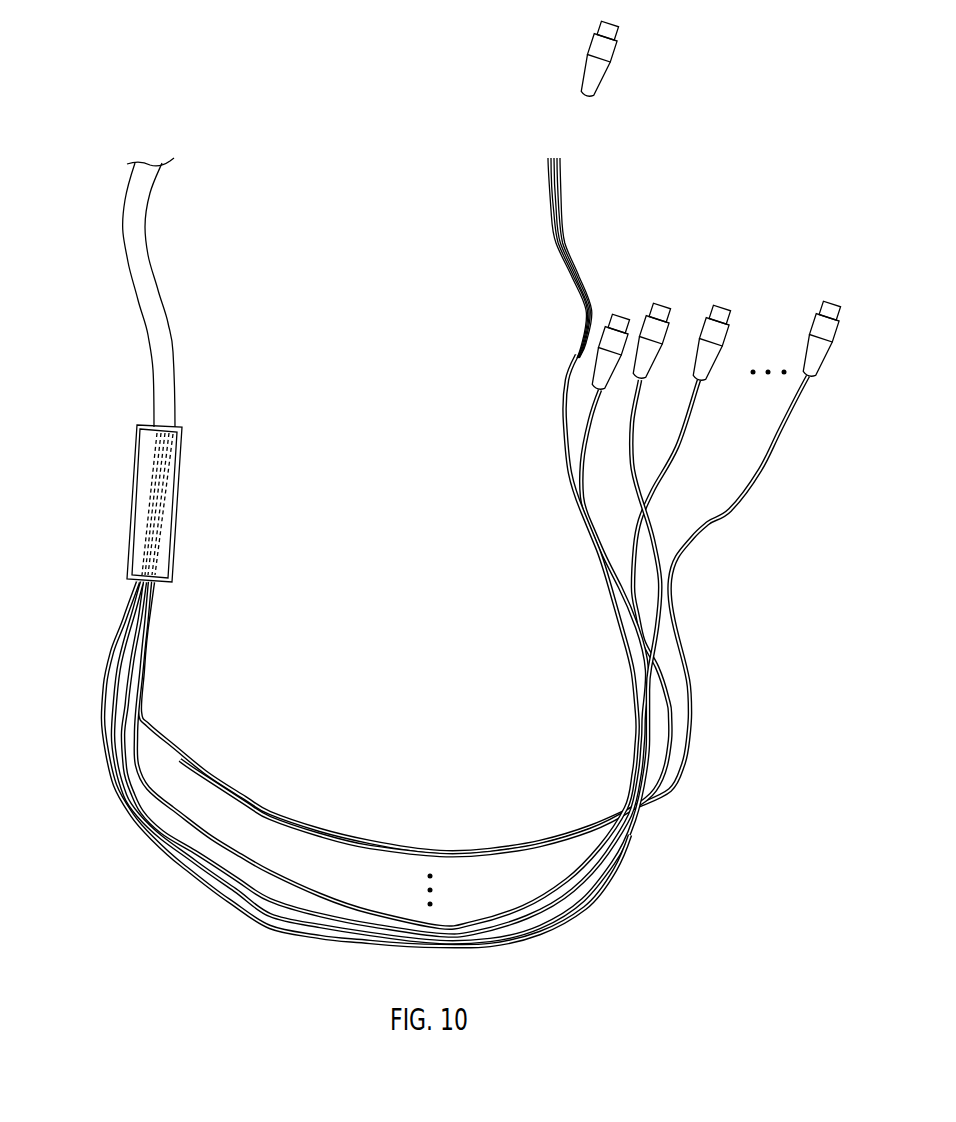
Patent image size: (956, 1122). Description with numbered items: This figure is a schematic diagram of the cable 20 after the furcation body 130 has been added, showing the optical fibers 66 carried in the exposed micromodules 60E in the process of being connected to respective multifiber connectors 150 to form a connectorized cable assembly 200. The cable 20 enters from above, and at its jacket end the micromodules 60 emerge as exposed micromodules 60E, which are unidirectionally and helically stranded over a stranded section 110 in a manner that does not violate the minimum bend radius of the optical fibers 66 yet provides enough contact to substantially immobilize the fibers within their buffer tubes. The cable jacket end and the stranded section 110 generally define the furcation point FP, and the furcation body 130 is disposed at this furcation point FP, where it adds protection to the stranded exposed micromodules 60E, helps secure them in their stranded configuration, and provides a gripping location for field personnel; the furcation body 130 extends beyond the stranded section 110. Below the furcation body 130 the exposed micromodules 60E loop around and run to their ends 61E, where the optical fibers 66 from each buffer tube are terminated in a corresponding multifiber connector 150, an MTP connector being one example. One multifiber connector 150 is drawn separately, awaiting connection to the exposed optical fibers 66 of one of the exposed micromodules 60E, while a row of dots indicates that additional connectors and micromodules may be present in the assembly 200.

The connectorized cable assembly 200 is at (127, 110).
The cable 20 is at (140, 277).
The furcation body 130 is at (137, 460).
The stranded section 110 is at (142, 524).
The micromodules 60 is at (165, 448).
The furcation point FP is at (185, 488).
The multifiber connectors 150 is at (558, 150).
The optical fibers 66 is at (540, 228).
The ends of exposed micromodules 61E is at (578, 353).
The exposed micromodules 60E is at (283, 903).